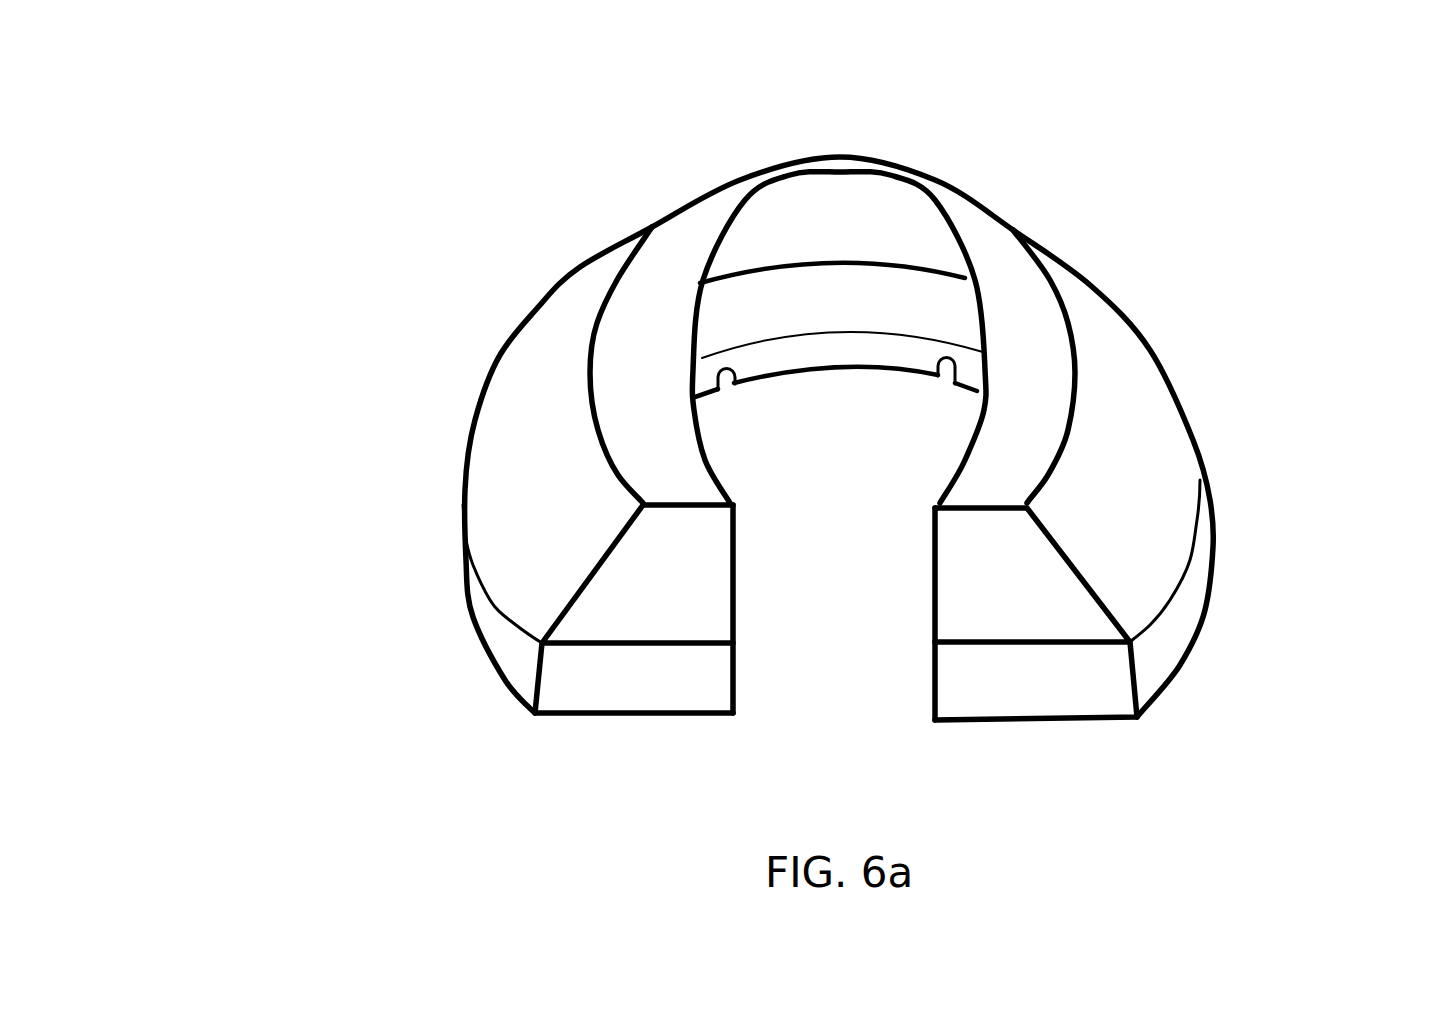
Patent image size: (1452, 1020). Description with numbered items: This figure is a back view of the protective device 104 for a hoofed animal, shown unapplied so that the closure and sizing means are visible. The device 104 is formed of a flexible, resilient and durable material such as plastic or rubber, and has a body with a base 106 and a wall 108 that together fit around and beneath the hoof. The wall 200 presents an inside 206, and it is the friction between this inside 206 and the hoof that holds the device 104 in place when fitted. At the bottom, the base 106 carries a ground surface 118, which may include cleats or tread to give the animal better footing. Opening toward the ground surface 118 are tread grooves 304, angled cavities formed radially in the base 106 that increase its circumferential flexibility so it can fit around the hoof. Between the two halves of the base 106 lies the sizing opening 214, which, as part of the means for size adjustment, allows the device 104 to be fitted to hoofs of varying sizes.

The device 104 is at (847, 60).
The base 106 is at (502, 633).
The wall 108 is at (1133, 390).
The ground surface 118 is at (593, 718).
The wall 200 is at (830, 357).
The inside 206 is at (853, 205).
The sizing opening 214 is at (927, 730).
The tread grooves 304 is at (737, 385).